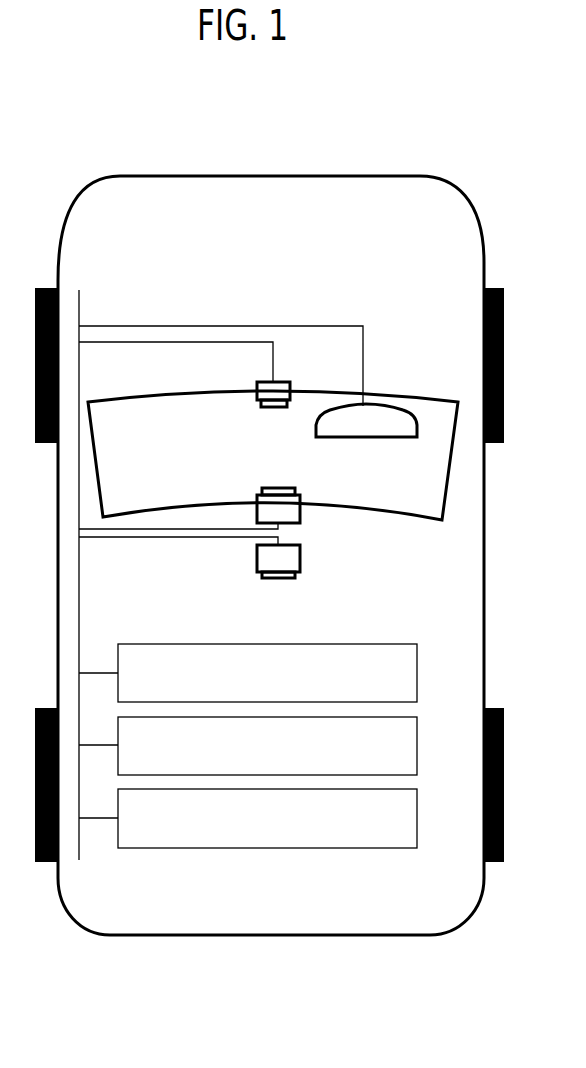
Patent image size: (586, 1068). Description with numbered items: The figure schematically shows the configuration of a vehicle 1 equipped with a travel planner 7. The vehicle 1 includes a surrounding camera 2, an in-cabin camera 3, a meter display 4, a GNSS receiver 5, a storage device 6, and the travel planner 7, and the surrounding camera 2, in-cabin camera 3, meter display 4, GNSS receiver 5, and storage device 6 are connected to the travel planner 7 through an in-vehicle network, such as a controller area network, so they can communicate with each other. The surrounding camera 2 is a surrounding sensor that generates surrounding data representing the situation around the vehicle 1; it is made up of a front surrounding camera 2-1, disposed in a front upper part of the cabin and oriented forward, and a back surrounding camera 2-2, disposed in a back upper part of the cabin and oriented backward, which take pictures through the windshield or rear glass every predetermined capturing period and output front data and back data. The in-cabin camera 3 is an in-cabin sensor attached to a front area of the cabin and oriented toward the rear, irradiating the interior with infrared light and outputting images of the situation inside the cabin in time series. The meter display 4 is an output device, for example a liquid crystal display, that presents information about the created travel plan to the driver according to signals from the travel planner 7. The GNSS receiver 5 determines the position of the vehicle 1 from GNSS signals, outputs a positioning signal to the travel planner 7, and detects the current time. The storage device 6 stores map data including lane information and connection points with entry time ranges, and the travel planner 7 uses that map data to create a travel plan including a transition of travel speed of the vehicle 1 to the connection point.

The vehicle 1 is at (392, 172).
The surrounding camera 2 is at (330, 545).
The front surrounding camera 2-1 is at (300, 510).
The back surrounding camera 2-2 is at (368, 537).
The in-cabin camera 3 is at (257, 385).
The meter display 4 is at (343, 405).
The GNSS receiver 5 is at (417, 680).
The storage device 6 is at (417, 752).
The travel planner 7 is at (417, 823).